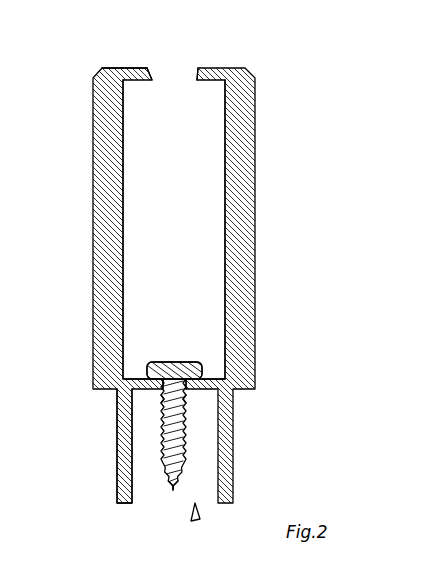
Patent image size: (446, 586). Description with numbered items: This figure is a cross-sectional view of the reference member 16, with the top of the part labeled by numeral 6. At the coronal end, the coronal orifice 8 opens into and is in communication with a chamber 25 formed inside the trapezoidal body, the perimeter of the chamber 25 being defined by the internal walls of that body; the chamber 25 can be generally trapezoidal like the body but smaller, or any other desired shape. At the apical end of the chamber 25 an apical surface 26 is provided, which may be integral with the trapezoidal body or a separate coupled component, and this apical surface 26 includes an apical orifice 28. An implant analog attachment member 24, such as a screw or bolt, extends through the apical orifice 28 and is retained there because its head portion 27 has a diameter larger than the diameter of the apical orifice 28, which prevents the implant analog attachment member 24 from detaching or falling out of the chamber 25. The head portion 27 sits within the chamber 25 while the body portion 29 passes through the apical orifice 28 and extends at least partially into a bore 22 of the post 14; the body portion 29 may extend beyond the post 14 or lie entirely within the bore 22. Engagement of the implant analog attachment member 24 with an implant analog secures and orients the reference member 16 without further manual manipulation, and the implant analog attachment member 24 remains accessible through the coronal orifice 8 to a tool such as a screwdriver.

The top wall 6 is at (125, 68).
The coronal orifice 8 is at (196, 68).
The post 14 is at (113, 460).
The reference member 16 is at (302, 52).
The bore 22 is at (198, 520).
The implant analog attachment member 24 is at (173, 447).
The chamber 25 is at (207, 160).
The apical surface 26 is at (207, 380).
The head portion 27 is at (193, 362).
The apical orifice 28 is at (163, 401).
The body portion 29 is at (170, 473).